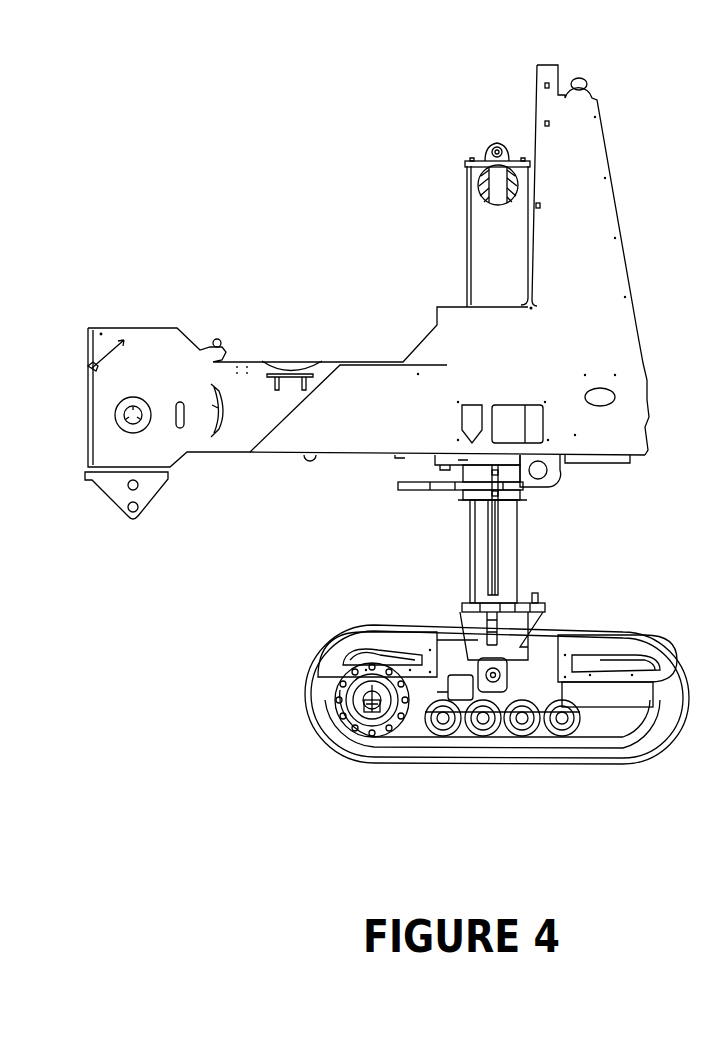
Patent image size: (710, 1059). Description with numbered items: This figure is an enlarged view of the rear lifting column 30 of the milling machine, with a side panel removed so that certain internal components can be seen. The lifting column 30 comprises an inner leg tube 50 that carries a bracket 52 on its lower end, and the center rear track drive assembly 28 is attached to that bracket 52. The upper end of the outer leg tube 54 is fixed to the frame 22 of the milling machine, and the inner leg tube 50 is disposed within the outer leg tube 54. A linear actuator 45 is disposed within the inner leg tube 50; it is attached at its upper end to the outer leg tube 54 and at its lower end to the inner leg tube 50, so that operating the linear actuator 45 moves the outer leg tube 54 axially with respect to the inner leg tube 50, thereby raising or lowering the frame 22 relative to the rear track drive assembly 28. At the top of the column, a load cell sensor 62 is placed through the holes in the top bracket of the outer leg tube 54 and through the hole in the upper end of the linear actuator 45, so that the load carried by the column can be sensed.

The frame 22 is at (227, 457).
The center rear track drive assembly 28 is at (293, 692).
The lifting column 30 is at (462, 272).
The linear actuator 45 is at (503, 198).
The inner leg tube 50 is at (520, 550).
The bracket 52 is at (452, 618).
The outer leg tube 54 is at (487, 235).
The load cell sensor 62 is at (502, 145).